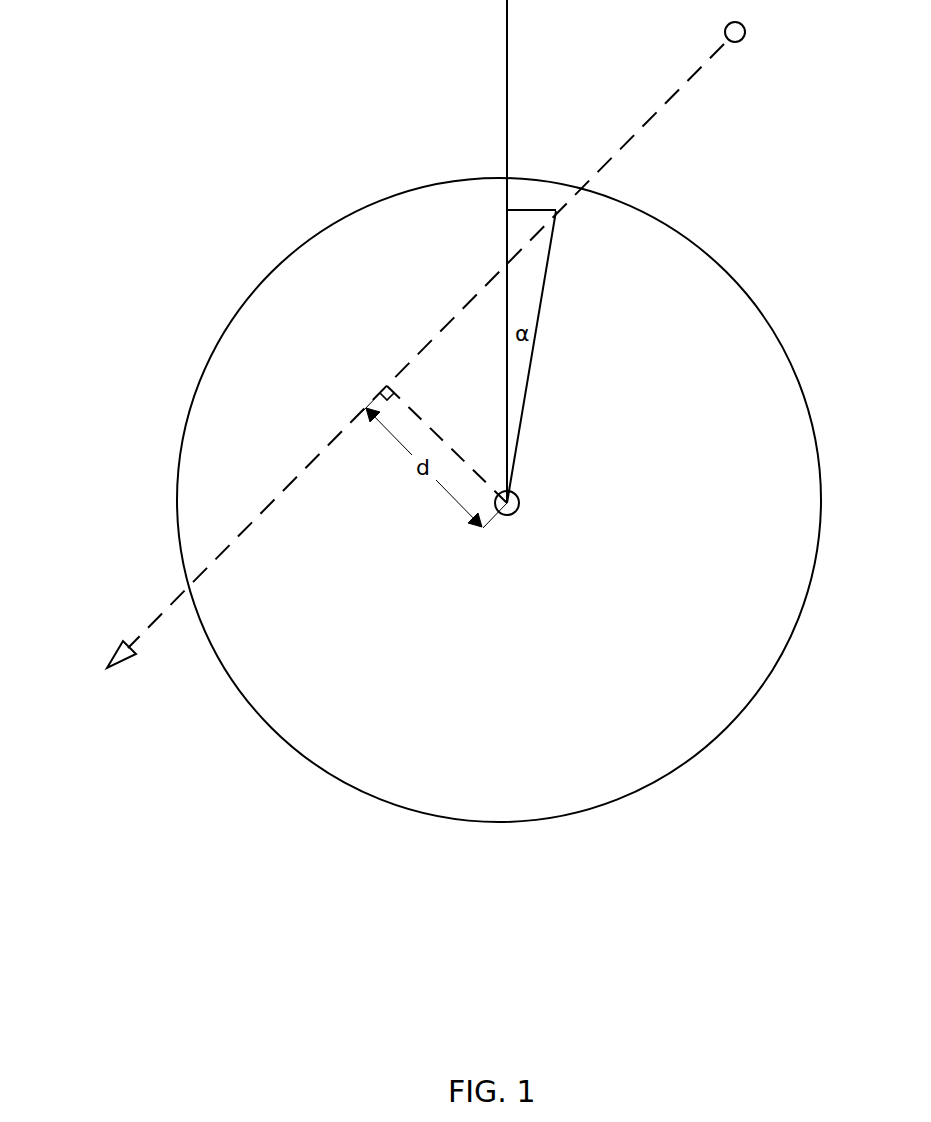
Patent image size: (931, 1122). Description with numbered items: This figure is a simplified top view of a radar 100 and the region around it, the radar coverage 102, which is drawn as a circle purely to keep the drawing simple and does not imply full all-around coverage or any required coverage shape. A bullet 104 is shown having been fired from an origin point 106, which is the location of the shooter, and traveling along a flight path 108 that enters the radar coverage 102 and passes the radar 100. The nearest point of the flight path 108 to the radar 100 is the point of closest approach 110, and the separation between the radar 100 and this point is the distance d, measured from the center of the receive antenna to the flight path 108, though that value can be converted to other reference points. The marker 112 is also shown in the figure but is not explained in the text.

The radar 100 is at (519, 511).
The radar coverage 102 is at (285, 256).
The bullet 104 is at (118, 648).
The origin point 106 is at (745, 40).
The flight path 108 is at (656, 116).
The point of closest approach 110 is at (384, 385).
The intersection point on circle with angle line 112 is at (563, 219).